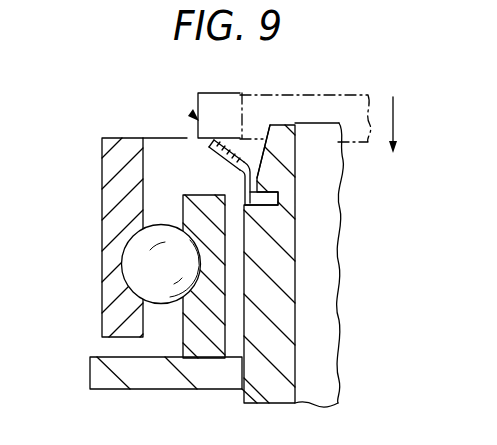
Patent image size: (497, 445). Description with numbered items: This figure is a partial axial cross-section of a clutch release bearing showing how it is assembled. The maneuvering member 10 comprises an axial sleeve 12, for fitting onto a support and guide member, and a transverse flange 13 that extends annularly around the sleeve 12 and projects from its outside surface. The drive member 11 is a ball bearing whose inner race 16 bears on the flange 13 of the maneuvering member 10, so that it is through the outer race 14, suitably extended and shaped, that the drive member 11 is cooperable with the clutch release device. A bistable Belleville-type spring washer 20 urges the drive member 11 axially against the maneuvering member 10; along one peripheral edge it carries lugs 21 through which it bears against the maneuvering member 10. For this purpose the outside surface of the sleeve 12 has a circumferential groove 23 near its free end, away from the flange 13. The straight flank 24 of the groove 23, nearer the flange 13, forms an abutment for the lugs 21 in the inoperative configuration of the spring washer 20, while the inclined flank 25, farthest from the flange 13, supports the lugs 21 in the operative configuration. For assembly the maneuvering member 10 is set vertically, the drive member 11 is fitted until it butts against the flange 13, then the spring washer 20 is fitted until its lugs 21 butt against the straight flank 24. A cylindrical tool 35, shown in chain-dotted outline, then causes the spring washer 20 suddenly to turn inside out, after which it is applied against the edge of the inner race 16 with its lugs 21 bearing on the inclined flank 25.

The maneuvering member 10 is at (354, 232).
The drive member 11 is at (96, 257).
The axial sleeve 12 is at (285, 306).
The transverse flange 13 is at (128, 373).
The outer race 14 is at (110, 189).
The inner race 16 is at (205, 342).
The spring washer 20 is at (238, 156).
The lug 21 is at (239, 181).
The circumferential groove 23 is at (258, 195).
The flank 24 is at (260, 207).
The flank 25 is at (257, 178).
The cylindrical tool 35 is at (192, 113).